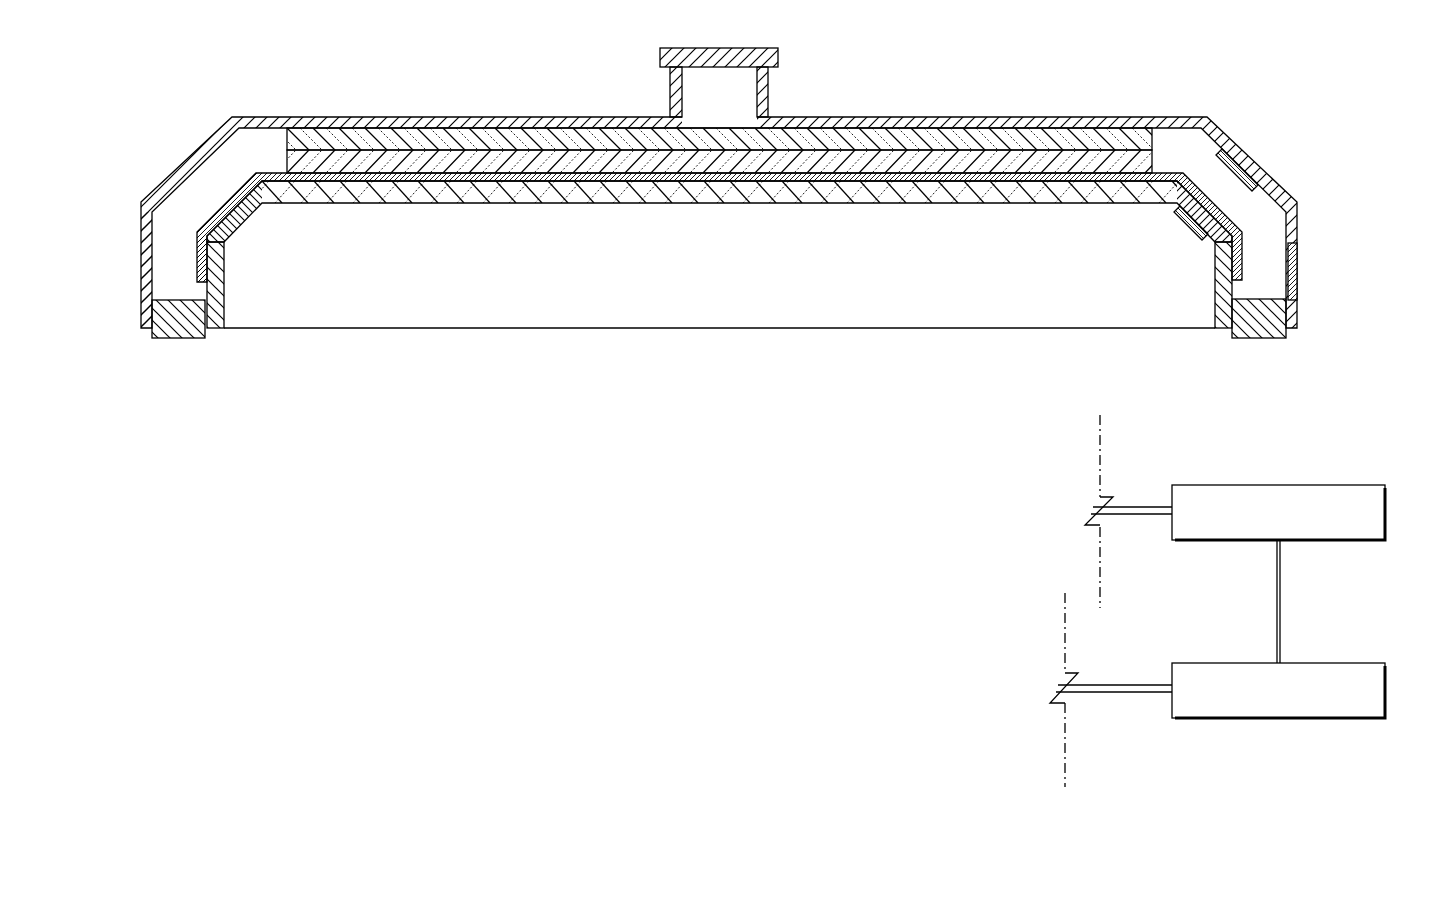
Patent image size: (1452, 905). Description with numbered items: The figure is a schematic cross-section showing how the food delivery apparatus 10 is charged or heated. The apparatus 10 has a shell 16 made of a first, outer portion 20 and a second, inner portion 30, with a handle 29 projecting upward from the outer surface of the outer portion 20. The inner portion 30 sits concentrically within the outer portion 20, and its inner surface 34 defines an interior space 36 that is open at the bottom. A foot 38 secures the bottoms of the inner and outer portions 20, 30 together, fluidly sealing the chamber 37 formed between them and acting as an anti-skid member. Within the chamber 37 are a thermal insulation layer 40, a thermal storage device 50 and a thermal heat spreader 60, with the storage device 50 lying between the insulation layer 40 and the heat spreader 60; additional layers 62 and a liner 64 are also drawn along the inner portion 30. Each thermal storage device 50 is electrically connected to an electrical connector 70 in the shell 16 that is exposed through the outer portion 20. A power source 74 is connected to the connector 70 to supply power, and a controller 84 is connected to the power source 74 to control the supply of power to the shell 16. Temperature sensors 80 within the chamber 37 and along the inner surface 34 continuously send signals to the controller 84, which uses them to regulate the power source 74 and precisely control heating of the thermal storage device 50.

The food delivery apparatus 10 is at (1269, 93).
The shell 16 is at (142, 274).
The outer portion 20 is at (158, 153).
The handle 29 is at (755, 56).
The inner portion 30 is at (226, 304).
The inner surface 34 is at (1214, 300).
The interior space 36 is at (719, 312).
The chamber 37 is at (263, 158).
The foot 38 is at (1262, 339).
The thermal insulation layer 40 is at (410, 140).
The thermal storage device 50 is at (990, 158).
The thermal heat spreader 60 is at (172, 240).
The insulating layer 62 is at (522, 182).
The liner 64 is at (208, 250).
The electrical connector 70 is at (1298, 272).
The power source 74 is at (1386, 693).
The temperature sensor 80 is at (1248, 162).
The controller 84 is at (1386, 515).